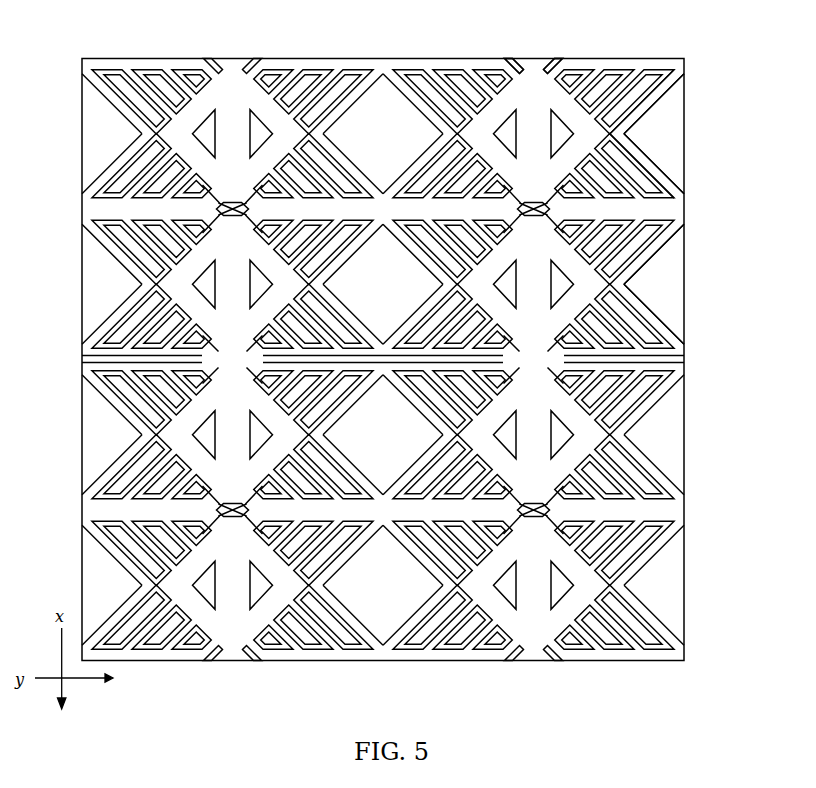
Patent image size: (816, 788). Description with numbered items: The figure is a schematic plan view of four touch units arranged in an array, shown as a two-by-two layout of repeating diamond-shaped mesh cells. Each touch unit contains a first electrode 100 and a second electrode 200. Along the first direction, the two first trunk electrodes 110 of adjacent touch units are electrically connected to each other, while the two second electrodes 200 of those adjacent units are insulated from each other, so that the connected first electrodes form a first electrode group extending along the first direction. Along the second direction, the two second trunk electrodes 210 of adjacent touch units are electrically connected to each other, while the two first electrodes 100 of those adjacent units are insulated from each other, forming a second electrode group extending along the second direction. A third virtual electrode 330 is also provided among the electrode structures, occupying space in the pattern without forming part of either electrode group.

The first electrode 100 is at (457, 72).
The first trunk electrode 110 is at (532, 80).
The second electrode 200 is at (647, 152).
The second trunk electrode 210 is at (632, 204).
The third virtual electrode 330 is at (665, 290).